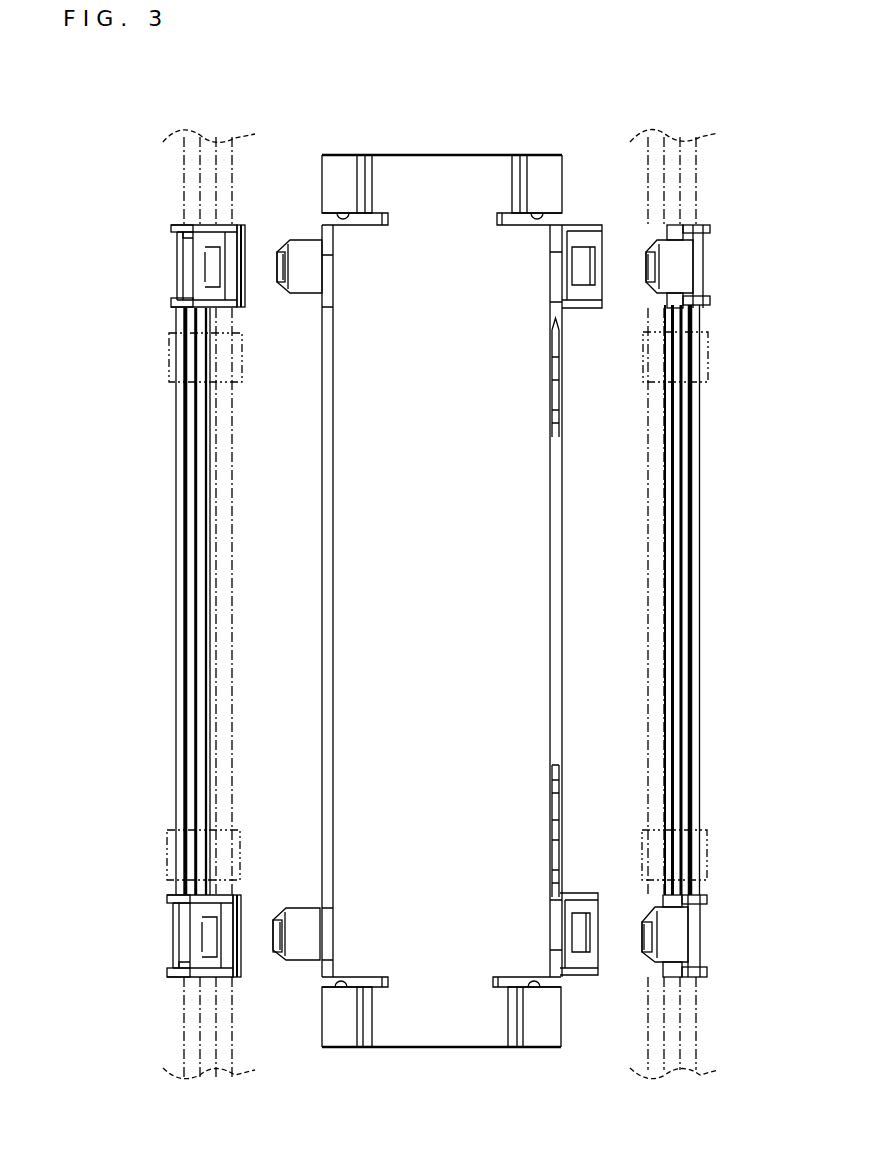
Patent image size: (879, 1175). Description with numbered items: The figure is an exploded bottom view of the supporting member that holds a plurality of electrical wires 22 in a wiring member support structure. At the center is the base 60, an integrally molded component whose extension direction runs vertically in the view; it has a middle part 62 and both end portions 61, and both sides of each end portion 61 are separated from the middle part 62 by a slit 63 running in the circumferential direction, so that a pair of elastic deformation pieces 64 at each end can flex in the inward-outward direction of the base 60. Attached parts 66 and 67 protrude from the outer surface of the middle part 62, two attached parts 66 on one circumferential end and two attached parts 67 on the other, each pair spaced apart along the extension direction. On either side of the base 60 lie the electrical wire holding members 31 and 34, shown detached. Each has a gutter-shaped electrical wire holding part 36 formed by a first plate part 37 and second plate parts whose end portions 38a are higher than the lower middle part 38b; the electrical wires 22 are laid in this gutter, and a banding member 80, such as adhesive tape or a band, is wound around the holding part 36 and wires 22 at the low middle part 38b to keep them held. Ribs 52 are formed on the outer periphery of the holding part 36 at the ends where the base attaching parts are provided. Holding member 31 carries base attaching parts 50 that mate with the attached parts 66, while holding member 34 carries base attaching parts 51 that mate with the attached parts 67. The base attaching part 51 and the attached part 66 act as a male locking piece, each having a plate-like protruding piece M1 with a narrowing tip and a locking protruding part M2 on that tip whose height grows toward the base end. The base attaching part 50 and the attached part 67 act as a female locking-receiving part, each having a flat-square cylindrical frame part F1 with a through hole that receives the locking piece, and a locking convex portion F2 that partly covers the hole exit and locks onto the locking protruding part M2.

The electrical wires 22 is at (222, 137).
The electrical wire holding member 31 is at (172, 664).
The electrical wire holding member 34 is at (705, 657).
The electrical wire holding part 36 is at (176, 612).
The first plate part 37 is at (176, 563).
The end portion of the second plate part 38a is at (247, 262).
The middle part of the second plate part 38b is at (190, 528).
The base attaching part 50 is at (228, 233).
The base attaching part 51 is at (680, 253).
The rib 52 is at (171, 228).
The base 60 is at (444, 153).
The end portion of the base 61 is at (468, 167).
The middle part of the base 62 is at (533, 632).
The slit 63 is at (338, 212).
The elastic deformation piece 64 is at (327, 156).
The attached part 66 is at (300, 240).
The attached part 67 is at (582, 224).
The banding member 80 is at (169, 358).
The frame part F1 is at (222, 255).
The locking convex portion F2 is at (205, 278).
The protruding piece M1 is at (307, 288).
The locking protruding part M2 is at (279, 283).